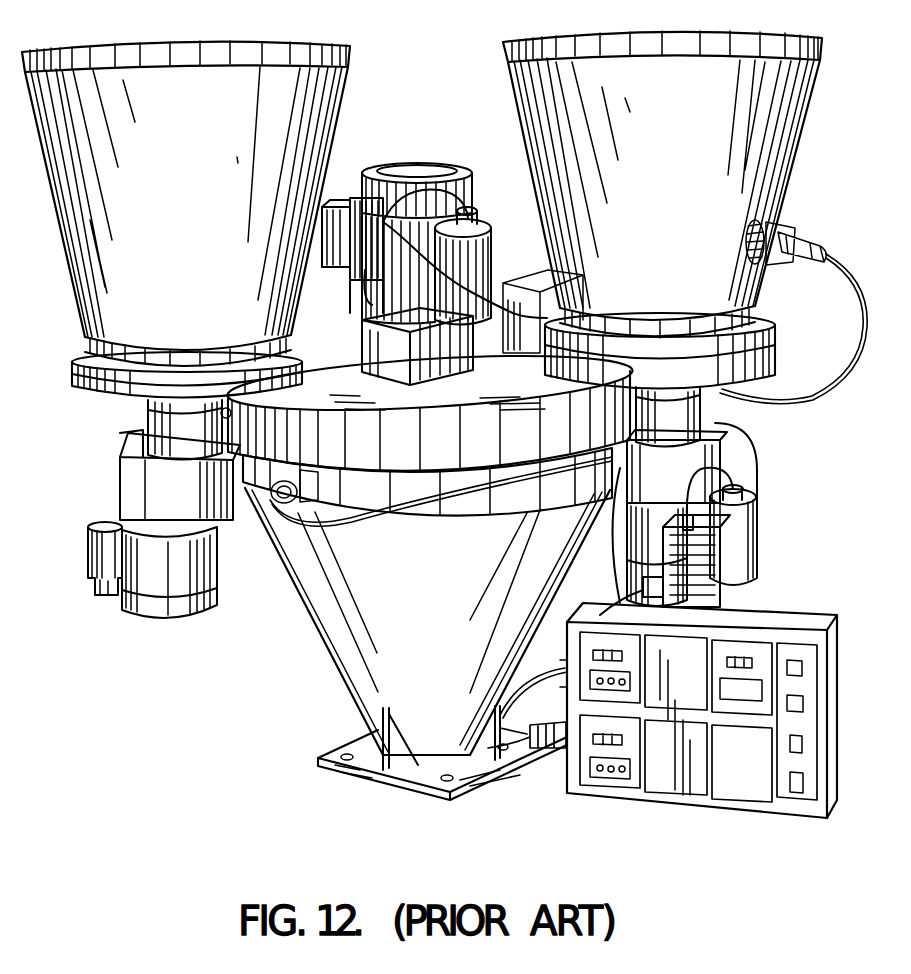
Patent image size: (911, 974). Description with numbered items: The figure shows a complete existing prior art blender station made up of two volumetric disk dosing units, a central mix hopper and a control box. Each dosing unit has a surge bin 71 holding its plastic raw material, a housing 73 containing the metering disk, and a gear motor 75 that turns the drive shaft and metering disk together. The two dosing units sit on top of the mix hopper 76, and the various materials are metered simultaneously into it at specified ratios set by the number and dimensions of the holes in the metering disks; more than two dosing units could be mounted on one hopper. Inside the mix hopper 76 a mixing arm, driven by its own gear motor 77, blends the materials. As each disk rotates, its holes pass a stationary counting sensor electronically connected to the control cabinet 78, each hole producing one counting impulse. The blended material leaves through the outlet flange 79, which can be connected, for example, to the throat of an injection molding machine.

The surge bin 71 is at (96, 277).
The housing 73 is at (107, 397).
The gear motor 75 is at (128, 490).
The mix hopper 76 is at (353, 655).
The gear motor 77 is at (420, 168).
The control cabinet 78 is at (770, 610).
The outlet flange 79 is at (330, 760).